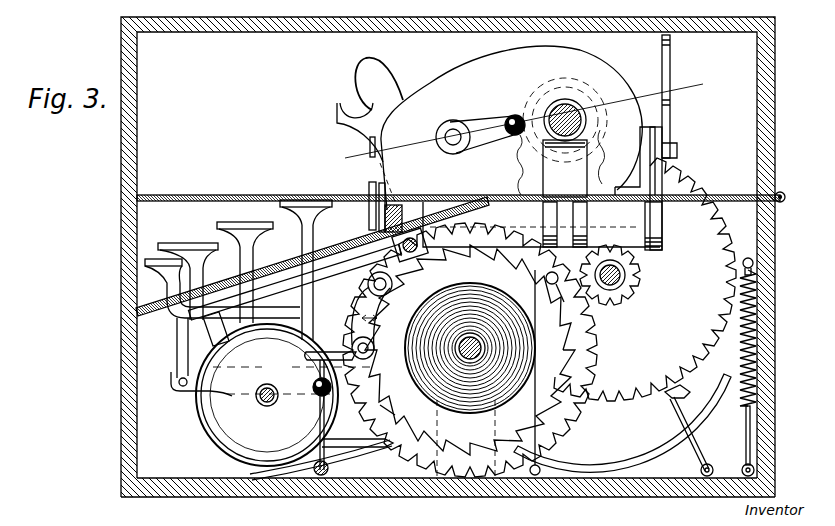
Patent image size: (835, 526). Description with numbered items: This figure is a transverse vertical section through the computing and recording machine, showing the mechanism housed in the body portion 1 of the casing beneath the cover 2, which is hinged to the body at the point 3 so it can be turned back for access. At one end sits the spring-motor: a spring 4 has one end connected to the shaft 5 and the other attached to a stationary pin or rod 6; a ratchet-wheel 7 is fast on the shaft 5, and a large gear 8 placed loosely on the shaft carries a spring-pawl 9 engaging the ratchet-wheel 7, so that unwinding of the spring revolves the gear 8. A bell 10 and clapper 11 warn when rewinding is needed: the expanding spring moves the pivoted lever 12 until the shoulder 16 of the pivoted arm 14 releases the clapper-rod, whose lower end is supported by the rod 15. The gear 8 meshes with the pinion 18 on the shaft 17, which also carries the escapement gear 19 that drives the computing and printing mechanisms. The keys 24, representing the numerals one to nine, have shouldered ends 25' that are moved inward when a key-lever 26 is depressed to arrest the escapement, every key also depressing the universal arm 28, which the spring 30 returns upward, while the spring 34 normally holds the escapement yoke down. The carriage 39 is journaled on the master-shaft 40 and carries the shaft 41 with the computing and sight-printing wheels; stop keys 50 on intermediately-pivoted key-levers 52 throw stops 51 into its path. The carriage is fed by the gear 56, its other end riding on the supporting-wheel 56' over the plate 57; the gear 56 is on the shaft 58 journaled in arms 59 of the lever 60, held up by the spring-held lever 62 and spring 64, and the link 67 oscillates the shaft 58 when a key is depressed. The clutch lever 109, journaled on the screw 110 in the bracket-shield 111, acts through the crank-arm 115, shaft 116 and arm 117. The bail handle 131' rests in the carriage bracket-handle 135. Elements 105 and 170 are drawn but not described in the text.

The body portion of casing 1 is at (127, 420).
The cover 2 is at (125, 157).
The hinge point 3 is at (783, 200).
The spring 4 is at (497, 290).
The shaft 5 is at (470, 348).
The stationary pin or rod 6 is at (534, 476).
The ratchet-wheel 7 is at (470, 350).
The large gear 8 is at (420, 440).
The spring-pawl 9 is at (568, 378).
The bell 10 is at (232, 437).
The clapper 11 is at (305, 423).
The pivoted lever 12 is at (392, 412).
The pivoted arm 14 is at (333, 345).
The rod 15 is at (314, 472).
The shoulder 16 is at (292, 375).
The shaft 17 is at (620, 277).
The pinion 18 is at (637, 295).
The large gear 19 is at (644, 341).
The keys 24 is at (185, 230).
The shoulders 25' is at (689, 386).
The key-lever 26 is at (622, 423).
The universal arm 28 is at (357, 436).
The spring 30 is at (251, 476).
The spring 34 is at (673, 408).
The carriage 39 is at (511, 128).
The master-shaft 40 is at (567, 112).
The shaft 41 is at (454, 130).
The stop keys 50 is at (256, 330).
The stops 51 is at (565, 168).
The key-levers 52 is at (458, 208).
The gear 56 is at (395, 204).
The supporting-wheel 56' is at (359, 203).
The plate 57 is at (310, 254).
The shaft 58 is at (357, 311).
The arms 59 is at (211, 291).
The lever 60 is at (267, 393).
The spring-held lever 62 is at (752, 262).
The spring 64 is at (753, 336).
The link 67 is at (245, 323).
The pin 105 is at (369, 145).
The lever 109 is at (669, 72).
The screw 110 is at (676, 140).
The bracket-shield 111 is at (645, 175).
The crank-arm 115 is at (660, 234).
The shaft 116 is at (620, 224).
The arm 117 is at (565, 157).
The handle 131' is at (392, 75).
The carriage bracket or handle 135 is at (347, 128).
The key 170 is at (215, 233).